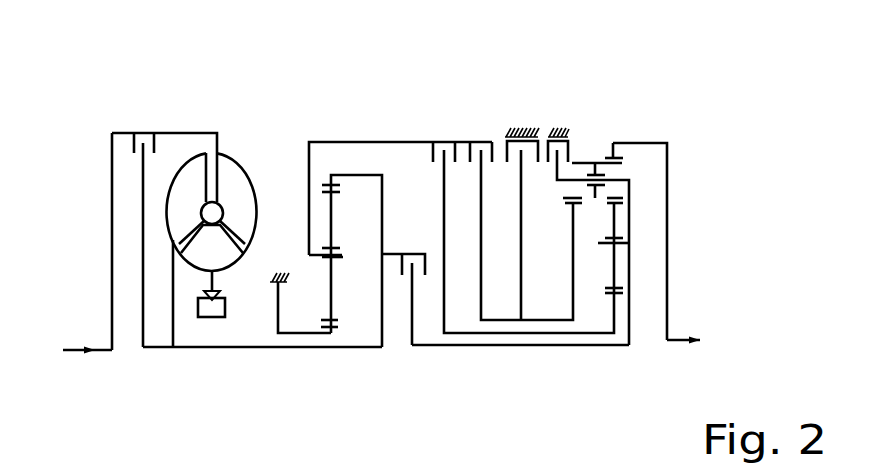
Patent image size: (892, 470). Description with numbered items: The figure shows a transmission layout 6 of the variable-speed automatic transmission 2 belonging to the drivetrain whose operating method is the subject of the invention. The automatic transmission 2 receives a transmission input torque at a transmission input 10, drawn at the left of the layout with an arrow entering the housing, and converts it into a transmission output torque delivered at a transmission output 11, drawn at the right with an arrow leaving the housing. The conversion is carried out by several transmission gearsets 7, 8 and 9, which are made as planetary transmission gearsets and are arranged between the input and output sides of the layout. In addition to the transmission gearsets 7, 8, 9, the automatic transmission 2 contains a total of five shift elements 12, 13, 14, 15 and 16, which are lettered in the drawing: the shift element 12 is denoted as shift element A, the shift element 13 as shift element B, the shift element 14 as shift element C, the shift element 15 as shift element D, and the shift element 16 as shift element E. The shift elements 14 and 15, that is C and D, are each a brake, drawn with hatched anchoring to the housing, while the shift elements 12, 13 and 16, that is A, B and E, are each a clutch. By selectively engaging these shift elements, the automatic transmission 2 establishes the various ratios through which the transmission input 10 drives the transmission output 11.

The automatic transmission 2 is at (184, 173).
The transmission layout 6 is at (198, 105).
The transmission gearset 7 is at (343, 265).
The transmission gearset 8 is at (614, 172).
The transmission gearset 9 is at (600, 253).
The transmission input 10 is at (105, 351).
The transmission output 11 is at (665, 340).
The shift element A 12 is at (430, 80).
The shift element B 13 is at (480, 80).
The shift element C 14 is at (528, 80).
The shift element D 15 is at (573, 88).
The shift element E 16 is at (400, 284).